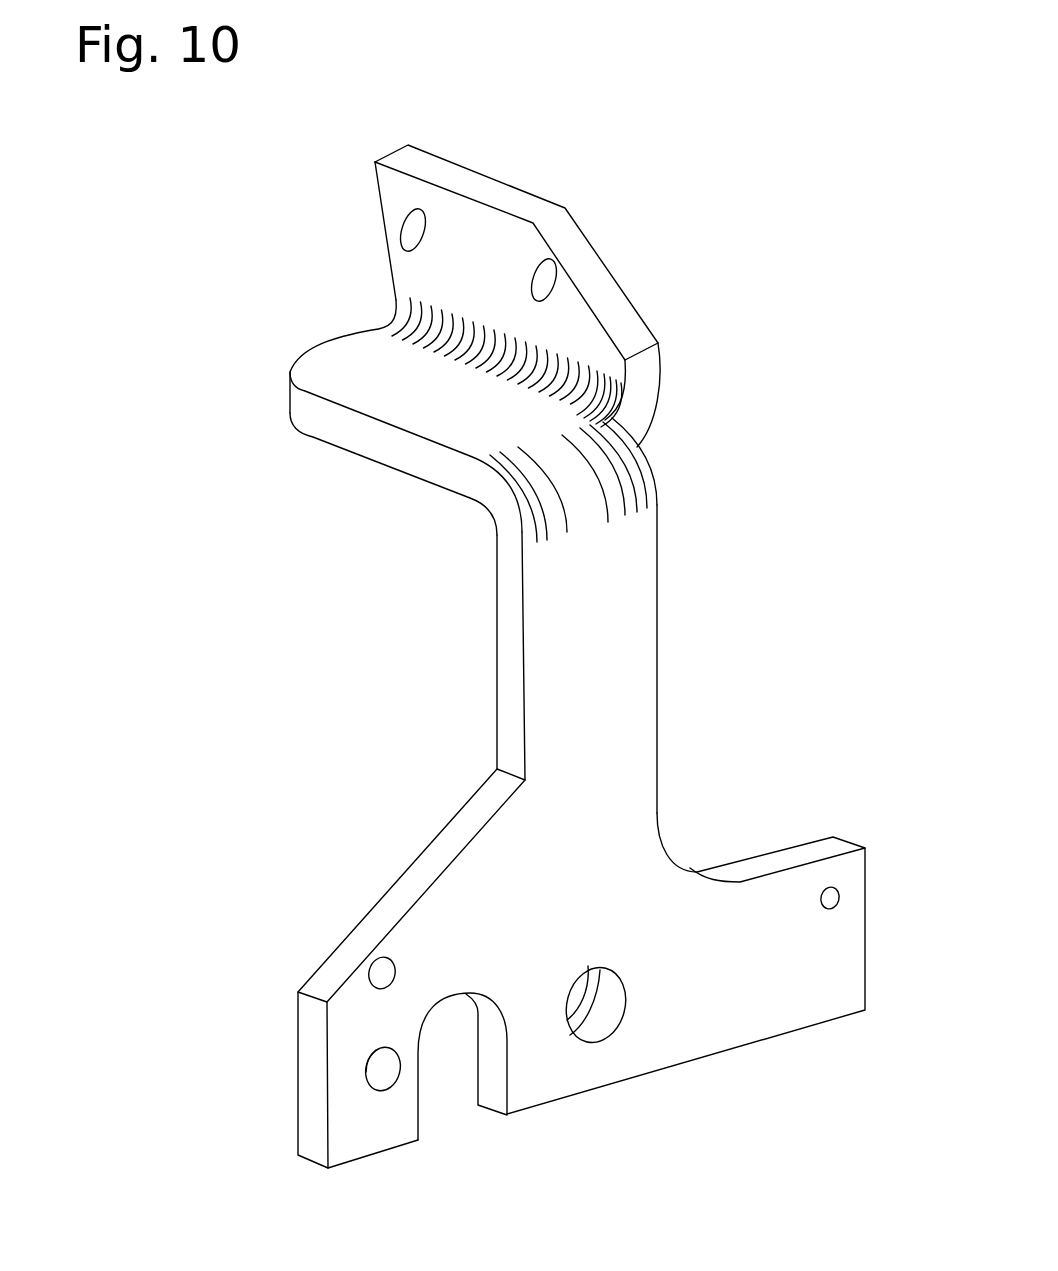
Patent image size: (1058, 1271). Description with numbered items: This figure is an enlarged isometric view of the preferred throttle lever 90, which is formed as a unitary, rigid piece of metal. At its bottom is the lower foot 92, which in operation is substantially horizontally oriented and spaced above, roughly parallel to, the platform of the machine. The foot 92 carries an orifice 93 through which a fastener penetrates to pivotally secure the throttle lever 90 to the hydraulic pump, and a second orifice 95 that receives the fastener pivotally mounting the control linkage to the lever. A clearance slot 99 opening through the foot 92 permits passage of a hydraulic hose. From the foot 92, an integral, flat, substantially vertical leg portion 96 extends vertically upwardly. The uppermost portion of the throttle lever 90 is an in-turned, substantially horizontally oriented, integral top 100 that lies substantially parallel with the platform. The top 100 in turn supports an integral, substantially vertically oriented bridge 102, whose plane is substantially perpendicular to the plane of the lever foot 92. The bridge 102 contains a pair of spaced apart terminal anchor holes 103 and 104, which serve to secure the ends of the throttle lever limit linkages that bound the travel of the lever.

The throttle lever 90 is at (710, 629).
The lower foot 92 is at (782, 900).
The orifice 93 is at (593, 962).
The orifice 95 is at (382, 968).
The leg portion 96 is at (640, 582).
The clearance slot 99 is at (453, 996).
The top 100 is at (357, 363).
The bridge 102 is at (590, 348).
The terminal anchor hole 103 is at (416, 226).
The terminal anchor hole 104 is at (548, 278).